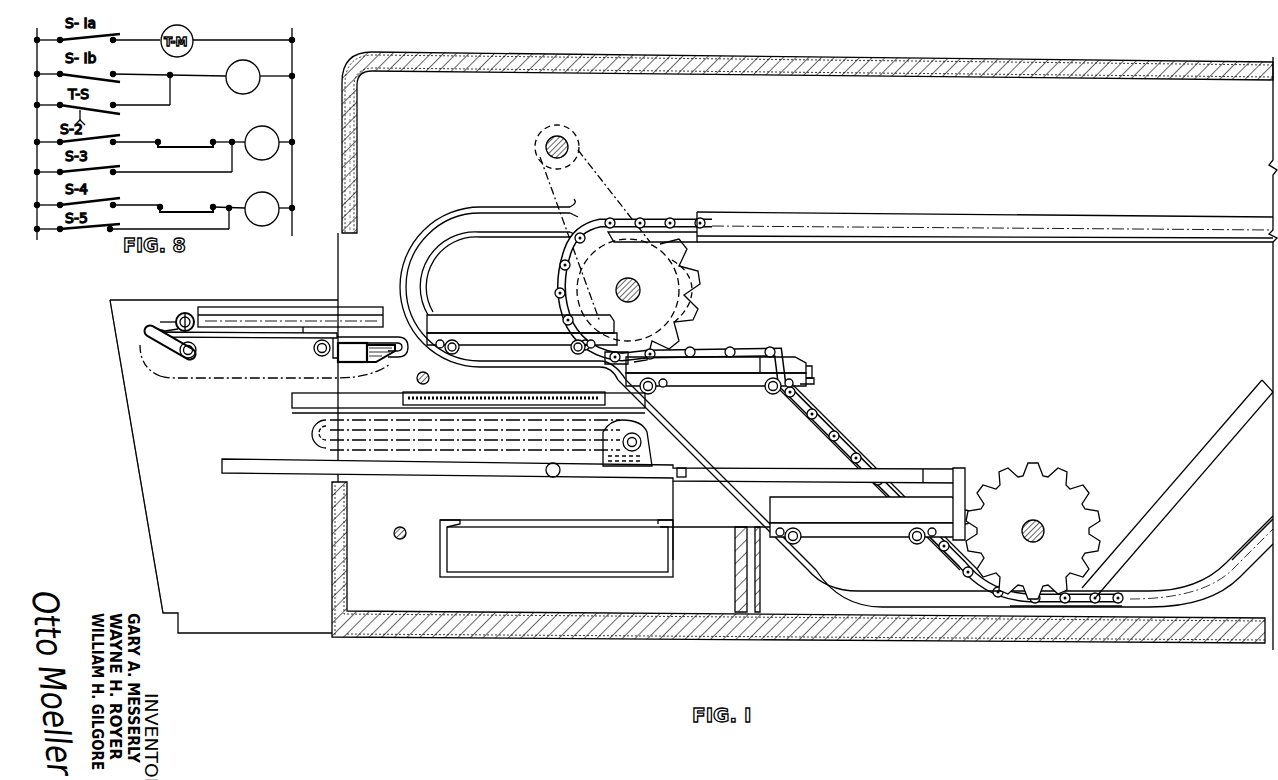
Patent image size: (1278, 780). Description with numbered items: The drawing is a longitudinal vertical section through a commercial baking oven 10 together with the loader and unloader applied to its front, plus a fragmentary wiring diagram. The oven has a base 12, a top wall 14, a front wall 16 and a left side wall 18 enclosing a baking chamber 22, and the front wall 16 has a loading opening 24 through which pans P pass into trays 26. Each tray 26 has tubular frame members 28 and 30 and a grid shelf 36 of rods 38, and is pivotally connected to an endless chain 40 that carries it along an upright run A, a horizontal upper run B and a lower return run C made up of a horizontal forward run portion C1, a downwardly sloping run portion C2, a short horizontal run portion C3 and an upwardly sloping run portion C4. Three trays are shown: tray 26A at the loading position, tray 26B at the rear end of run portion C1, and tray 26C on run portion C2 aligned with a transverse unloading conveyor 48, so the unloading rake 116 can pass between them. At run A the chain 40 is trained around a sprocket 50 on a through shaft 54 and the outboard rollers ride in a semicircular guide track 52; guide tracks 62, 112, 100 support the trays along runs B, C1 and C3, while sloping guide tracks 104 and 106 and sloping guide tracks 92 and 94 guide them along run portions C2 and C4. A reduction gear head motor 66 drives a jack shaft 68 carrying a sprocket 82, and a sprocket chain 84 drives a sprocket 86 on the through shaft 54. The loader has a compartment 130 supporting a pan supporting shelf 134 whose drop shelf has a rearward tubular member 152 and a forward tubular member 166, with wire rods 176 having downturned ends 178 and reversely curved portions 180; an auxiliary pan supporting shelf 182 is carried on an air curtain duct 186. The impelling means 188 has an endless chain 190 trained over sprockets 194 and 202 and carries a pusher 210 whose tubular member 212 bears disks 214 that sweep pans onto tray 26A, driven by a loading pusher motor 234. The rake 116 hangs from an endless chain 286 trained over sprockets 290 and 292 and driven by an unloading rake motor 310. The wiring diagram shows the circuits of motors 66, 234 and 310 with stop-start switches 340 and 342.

In FIG. 1, the baking oven 10 is at (818, 55).
In FIG. 1, the base 12 is at (624, 645).
In FIG. 1, the top wall 14 is at (648, 57).
In FIG. 1, the front wall 16 is at (343, 192).
In FIG. 1, the side wall 18 is at (803, 165).
In FIG. 1, the baking chamber 22 is at (1043, 342).
In FIG. 1, the loading opening 24 is at (342, 230).
In FIG. 1, the tray 26 is at (778, 350).
In FIG. 1, the tray in loading position 26A is at (483, 318).
In FIG. 1, the first succeeding tray 26B is at (754, 393).
In FIG. 1, the second succeeding tray 26C is at (850, 541).
In FIG. 1, the tubular frame member 28 is at (663, 378).
In FIG. 1, the tubular frame member 30 is at (762, 376).
In FIG. 1, the pan supporting shelf 36 is at (792, 375).
In FIG. 1, the rod 38 is at (814, 376).
In FIG. 1, the endless chain 40 is at (560, 262).
In FIG. 1, the unloading conveyor 48 is at (538, 522).
In FIG. 1, the sprocket 50 is at (692, 268).
In FIG. 1, the semicircular guide track 52 is at (420, 230).
In FIG. 1, the through shaft 54 is at (627, 280).
In FIG. 1, the guide track 62 is at (816, 240).
In FIG. 8, the reduction gear head motor 66 is at (254, 64).
In FIG. 1, the jack shaft 68 is at (570, 142).
In FIG. 1, the sprocket 82 is at (536, 140).
In FIG. 1, the sprocket chain 84 is at (606, 170).
In FIG. 1, the sprocket 86 is at (700, 293).
In FIG. 1, the sloping guide track 92 is at (1256, 530).
In FIG. 1, the sloping guide track 94 is at (1208, 439).
In FIG. 1, the guide track 100 is at (922, 606).
In FIG. 1, the sloping guide track 104 is at (868, 450).
In FIG. 1, the sloping guide track 106 is at (724, 490).
In FIG. 1, the guide track 112 is at (520, 369).
In FIG. 1, the unloading rake 116 is at (958, 462).
In FIG. 1, the compartment 130 is at (122, 395).
In FIG. 1, the pan supporting shelf 134 is at (268, 332).
In FIG. 1, the rearward tubular member 152 is at (314, 349).
In FIG. 1, the forward tubular member 166 is at (197, 350).
In FIG. 1, the wire rod 176 is at (308, 326).
In FIG. 1, the downwardly turned end 178 is at (330, 358).
In FIG. 1, the reversely curved portion 180 is at (172, 362).
In FIG. 1, the auxiliary pan supporting shelf 182 is at (356, 336).
In FIG. 1, the air curtain duct 186 is at (394, 356).
In FIG. 1, the impelling means 188 is at (163, 326).
In FIG. 1, the endless chain 190 is at (228, 380).
In FIG. 1, the sprocket 194 is at (150, 360).
In FIG. 1, the sprocket 202 is at (420, 305).
In FIG. 1, the pusher 210 is at (173, 318).
In FIG. 1, the tubular member 212 is at (191, 316).
In FIG. 1, the disk 214 is at (184, 313).
In FIG. 8, the loading pusher motor 234 is at (165, 132).
In FIG. 1, the endless chain 286 is at (418, 452).
In FIG. 1, the sprocket 290 is at (320, 450).
In FIG. 1, the sprocket 292 is at (612, 468).
In FIG. 8, the unloading rake motor 310 is at (165, 199).
In FIG. 8, the stop-start switch 340 is at (187, 146).
In FIG. 8, the stop-start switch 342 is at (185, 211).
In FIG. 1, the pan P is at (244, 306).
In FIG. 1, the upright tray conveyor run A is at (398, 274).
In FIG. 1, the upper tray conveyor run B is at (949, 208).
In FIG. 1, the lower tray conveyor run C is at (802, 597).
In FIG. 1, the horizontal forward run portion C1 is at (518, 367).
In FIG. 1, the sloping run portion C2 is at (792, 422).
In FIG. 1, the horizontal run portion C3 is at (1058, 606).
In FIG. 1, the sloping run portion C4 is at (1257, 522).